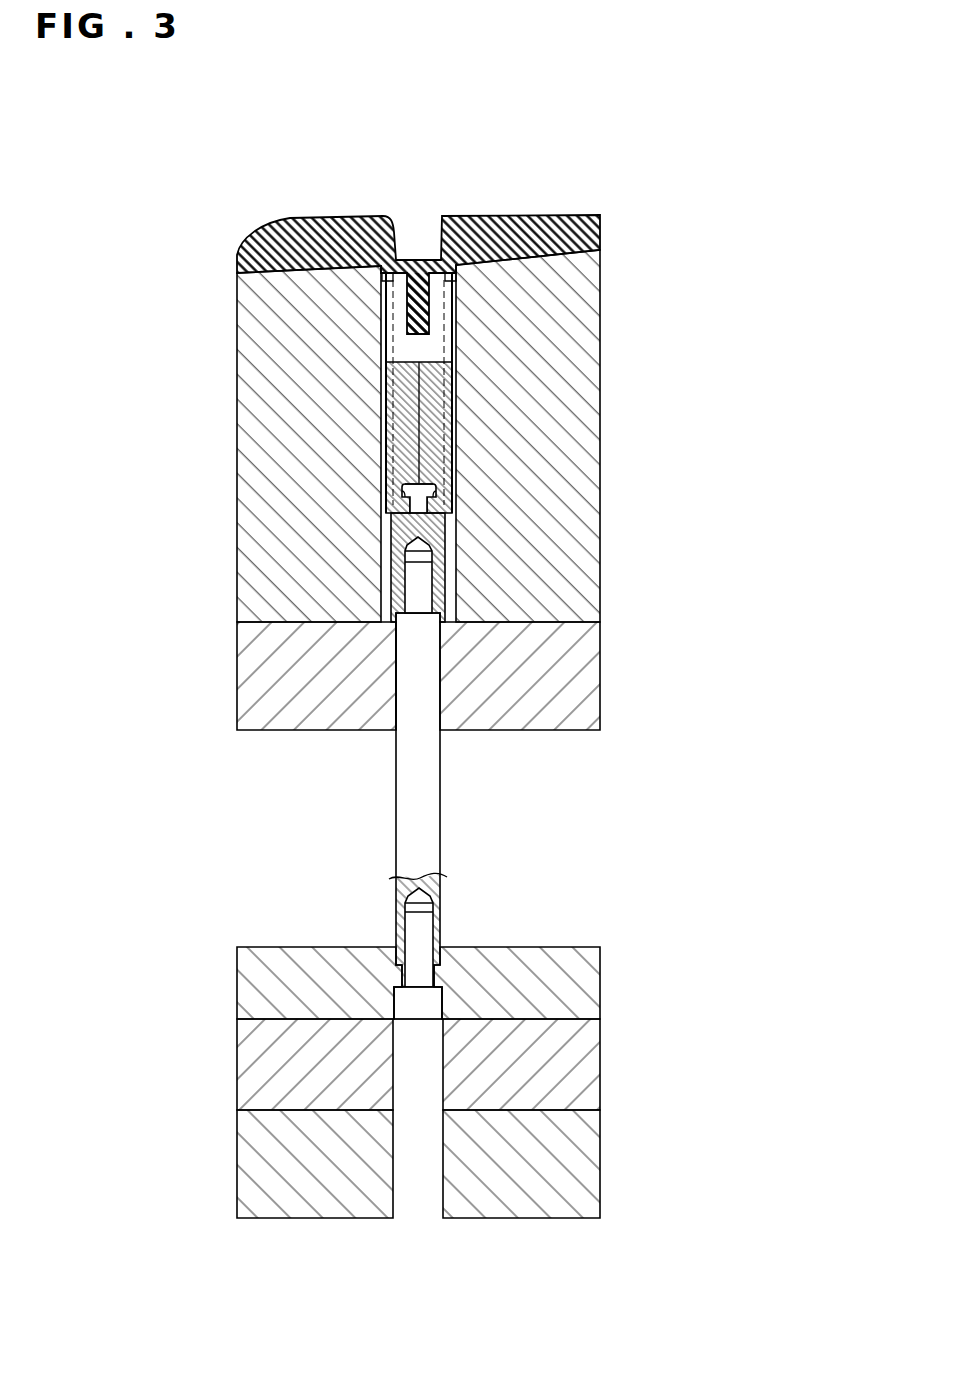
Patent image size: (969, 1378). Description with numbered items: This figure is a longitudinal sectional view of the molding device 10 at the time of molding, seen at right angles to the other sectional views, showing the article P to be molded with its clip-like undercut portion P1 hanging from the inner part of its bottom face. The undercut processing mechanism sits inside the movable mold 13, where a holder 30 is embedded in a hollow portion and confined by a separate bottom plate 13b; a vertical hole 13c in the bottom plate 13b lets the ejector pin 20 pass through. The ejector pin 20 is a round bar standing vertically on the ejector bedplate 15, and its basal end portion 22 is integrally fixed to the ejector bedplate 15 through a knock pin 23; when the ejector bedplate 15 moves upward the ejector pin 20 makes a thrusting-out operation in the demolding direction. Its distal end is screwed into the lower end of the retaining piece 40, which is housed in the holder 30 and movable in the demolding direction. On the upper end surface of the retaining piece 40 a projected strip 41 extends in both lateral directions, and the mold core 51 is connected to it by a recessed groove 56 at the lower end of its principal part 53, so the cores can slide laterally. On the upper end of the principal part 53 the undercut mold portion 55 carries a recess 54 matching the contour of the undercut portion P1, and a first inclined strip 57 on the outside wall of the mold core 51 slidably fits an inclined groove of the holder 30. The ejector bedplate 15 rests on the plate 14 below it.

The molding device 10 is at (607, 188).
The article to be molded P is at (486, 215).
The undercut portion P1 is at (447, 305).
The undercut mold portion 55 is at (402, 260).
The recess 54 is at (400, 303).
The mold core 51 is at (447, 340).
The first inclined strip 57 is at (382, 395).
The principal part 53 is at (382, 442).
The recessed groove 56 is at (408, 486).
The projected strip 41 is at (437, 498).
The holder 30 is at (460, 545).
The retaining piece 40 is at (447, 585).
The movable mold 13 is at (240, 557).
The bottom plate 13b is at (240, 678).
The vertical hole 13c is at (400, 705).
The ejector pin 20 is at (394, 830).
The basal end portion 22 is at (396, 912).
The knock pin 23 is at (432, 978).
The ejector bedplate 15 is at (240, 1019).
The base plate 14 is at (240, 1160).